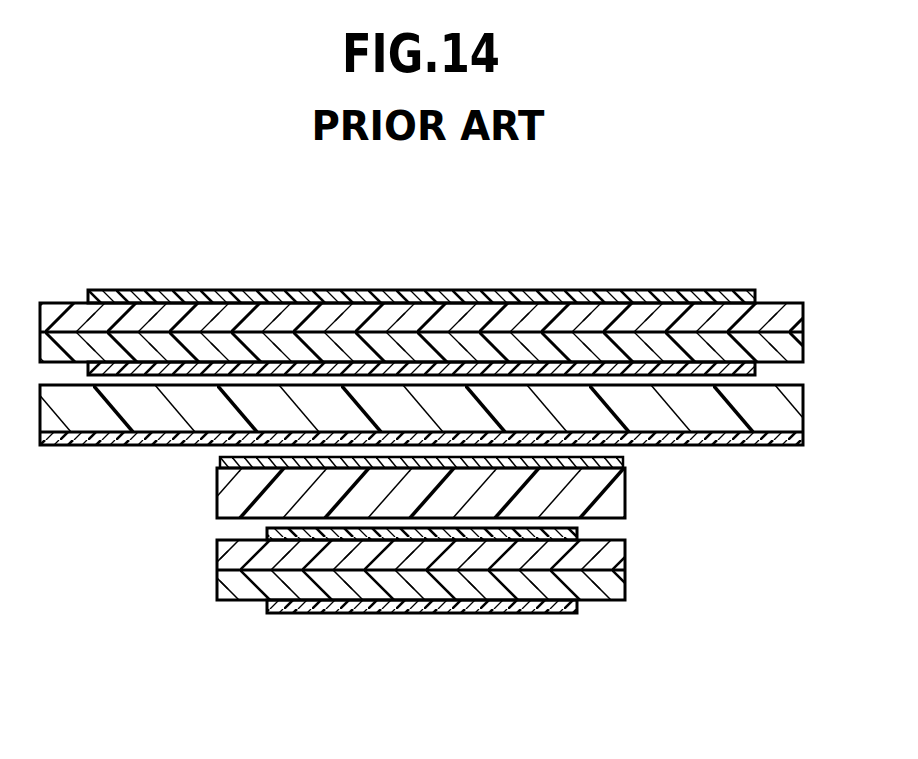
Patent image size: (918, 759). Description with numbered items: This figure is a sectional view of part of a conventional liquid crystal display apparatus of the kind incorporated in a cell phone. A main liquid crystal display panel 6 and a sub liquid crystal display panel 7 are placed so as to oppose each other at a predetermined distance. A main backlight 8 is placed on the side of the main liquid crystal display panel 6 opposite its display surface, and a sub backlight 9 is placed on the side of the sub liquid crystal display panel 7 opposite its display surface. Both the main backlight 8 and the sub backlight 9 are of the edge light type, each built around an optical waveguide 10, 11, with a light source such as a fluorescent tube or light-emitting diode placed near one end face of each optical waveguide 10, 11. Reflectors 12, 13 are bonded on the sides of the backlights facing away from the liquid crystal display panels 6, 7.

The main liquid crystal display panel 6 is at (579, 287).
The sub liquid crystal display panel 7 is at (517, 618).
The main backlight 8 is at (771, 450).
The sub backlight 9 is at (208, 515).
The optical waveguide 10 is at (727, 410).
The optical waveguide 11 is at (232, 490).
The reflector 12 is at (662, 437).
The reflector 13 is at (220, 462).